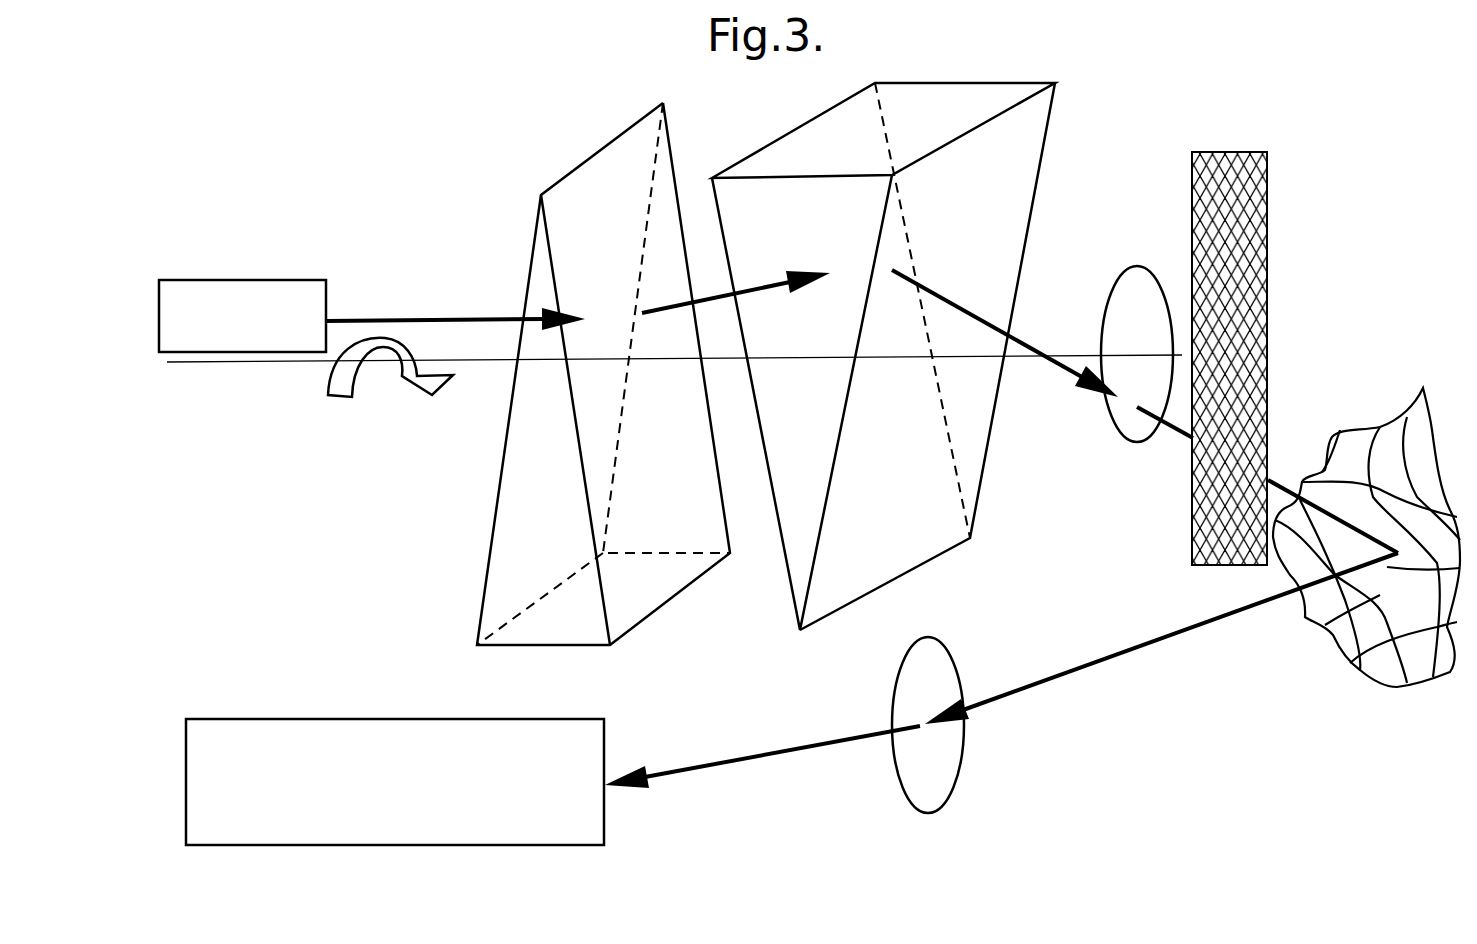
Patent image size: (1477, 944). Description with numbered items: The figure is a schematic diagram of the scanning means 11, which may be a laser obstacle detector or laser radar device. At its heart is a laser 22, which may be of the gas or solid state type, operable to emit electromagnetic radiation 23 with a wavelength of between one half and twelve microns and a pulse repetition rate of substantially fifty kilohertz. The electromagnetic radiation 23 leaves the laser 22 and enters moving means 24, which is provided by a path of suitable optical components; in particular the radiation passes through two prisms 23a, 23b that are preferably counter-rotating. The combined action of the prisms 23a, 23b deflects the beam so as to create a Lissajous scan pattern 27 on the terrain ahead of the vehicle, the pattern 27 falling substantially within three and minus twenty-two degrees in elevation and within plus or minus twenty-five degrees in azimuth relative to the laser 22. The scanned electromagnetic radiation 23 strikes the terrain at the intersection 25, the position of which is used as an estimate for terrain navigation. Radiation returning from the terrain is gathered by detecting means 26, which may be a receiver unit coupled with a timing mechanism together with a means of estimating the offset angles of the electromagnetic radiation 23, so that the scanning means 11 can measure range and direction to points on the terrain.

The scanning means 11 is at (253, 93).
The laser 22 is at (258, 330).
The electromagnetic radiation 23 is at (438, 318).
The prism 23a is at (648, 140).
The prism 23b is at (950, 95).
The moving means 24 is at (445, 193).
The intersection of the electromagnetic radiation and the terrain 25 is at (1325, 625).
The detecting means 26 is at (403, 791).
The Lissajous scan pattern 27 is at (1250, 208).